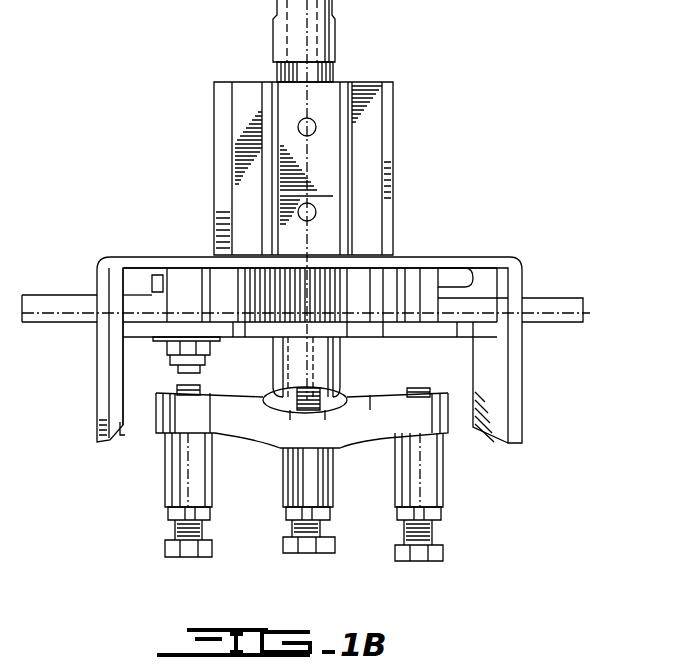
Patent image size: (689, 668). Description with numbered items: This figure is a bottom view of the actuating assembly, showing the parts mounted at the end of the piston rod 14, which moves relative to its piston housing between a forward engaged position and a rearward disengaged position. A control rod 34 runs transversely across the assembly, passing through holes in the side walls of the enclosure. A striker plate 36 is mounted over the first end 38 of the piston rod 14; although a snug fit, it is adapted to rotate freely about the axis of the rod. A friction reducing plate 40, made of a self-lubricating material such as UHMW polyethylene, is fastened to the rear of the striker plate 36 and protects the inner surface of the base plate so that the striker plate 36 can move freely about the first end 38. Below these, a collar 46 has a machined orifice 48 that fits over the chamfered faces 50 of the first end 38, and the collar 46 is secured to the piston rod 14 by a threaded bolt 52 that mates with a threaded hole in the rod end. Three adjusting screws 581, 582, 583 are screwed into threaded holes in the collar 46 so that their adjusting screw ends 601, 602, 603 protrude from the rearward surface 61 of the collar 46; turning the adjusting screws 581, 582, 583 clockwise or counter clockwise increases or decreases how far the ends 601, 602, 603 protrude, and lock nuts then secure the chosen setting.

The piston rod 14 is at (327, 40).
The control rod 34 is at (572, 310).
The striker plate 36 is at (235, 330).
The first end 38 is at (287, 385).
The friction reducing plate 40 is at (325, 275).
The collar 46 is at (400, 415).
The machined orifice 48 is at (283, 385).
The chamfered faces 50 is at (287, 410).
The threaded bolt 52 is at (282, 467).
The adjusting screw 581 is at (300, 545).
The adjusting screw 582 is at (178, 548).
The adjusting screw 583 is at (413, 548).
The adjusting screw end 601 is at (307, 385).
The adjusting screw end 602 is at (188, 388).
The adjusting screw end 603 is at (418, 388).
The rearward surface 61 is at (377, 397).